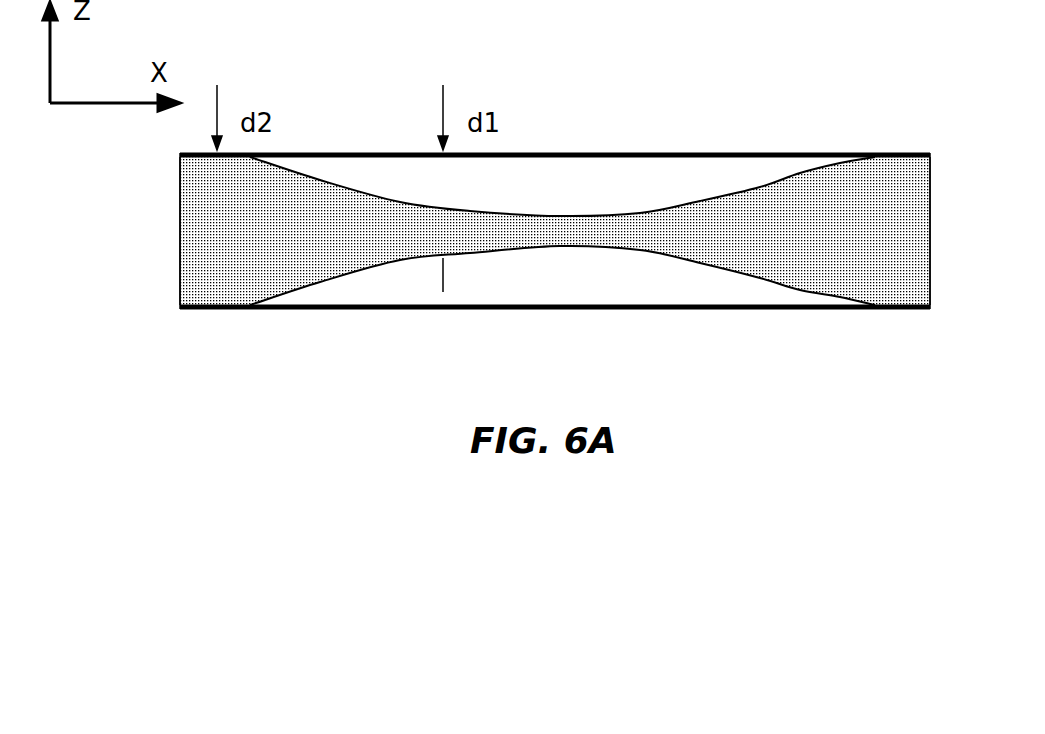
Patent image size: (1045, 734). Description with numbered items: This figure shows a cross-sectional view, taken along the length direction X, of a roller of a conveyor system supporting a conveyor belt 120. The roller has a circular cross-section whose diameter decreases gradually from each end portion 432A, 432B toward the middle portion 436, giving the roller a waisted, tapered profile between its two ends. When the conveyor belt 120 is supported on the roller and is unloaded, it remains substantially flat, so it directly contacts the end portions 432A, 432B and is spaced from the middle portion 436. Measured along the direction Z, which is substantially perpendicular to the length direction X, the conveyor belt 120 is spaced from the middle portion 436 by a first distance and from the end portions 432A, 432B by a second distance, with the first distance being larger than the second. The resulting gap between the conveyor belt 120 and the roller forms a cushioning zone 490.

The conveyor belt 120 is at (659, 132).
The cushioning zone 490 is at (725, 157).
The middle portion 436 is at (526, 264).
The end portion 432A is at (192, 330).
The end portion 432B is at (880, 308).